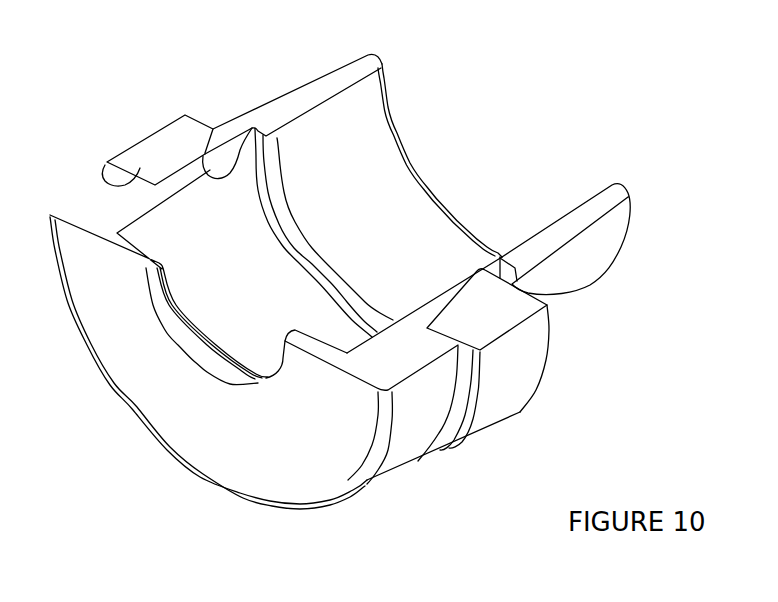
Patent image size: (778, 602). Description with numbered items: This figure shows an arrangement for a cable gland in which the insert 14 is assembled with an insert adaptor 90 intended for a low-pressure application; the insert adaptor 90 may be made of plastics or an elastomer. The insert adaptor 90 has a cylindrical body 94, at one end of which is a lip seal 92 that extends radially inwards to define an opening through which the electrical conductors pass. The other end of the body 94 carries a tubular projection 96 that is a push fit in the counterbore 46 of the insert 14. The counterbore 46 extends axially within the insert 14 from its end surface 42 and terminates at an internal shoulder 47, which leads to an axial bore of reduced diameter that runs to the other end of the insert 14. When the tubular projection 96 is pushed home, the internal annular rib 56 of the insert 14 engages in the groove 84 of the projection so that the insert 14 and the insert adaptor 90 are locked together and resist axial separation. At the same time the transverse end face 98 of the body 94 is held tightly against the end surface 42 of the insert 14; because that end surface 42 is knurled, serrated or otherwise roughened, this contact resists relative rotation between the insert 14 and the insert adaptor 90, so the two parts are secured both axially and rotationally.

The insert 14 is at (530, 353).
The end surface 42 is at (412, 467).
The counterbore 46 is at (578, 290).
The internal shoulder 47 is at (258, 132).
The internal annular rib 56 is at (463, 297).
The groove 84 is at (220, 178).
The insert adaptor 90 is at (417, 422).
The lip seal 92 is at (258, 383).
The cylindrical body 94 is at (63, 206).
The tubular projection 96 is at (180, 183).
The transverse end face 98 is at (112, 184).